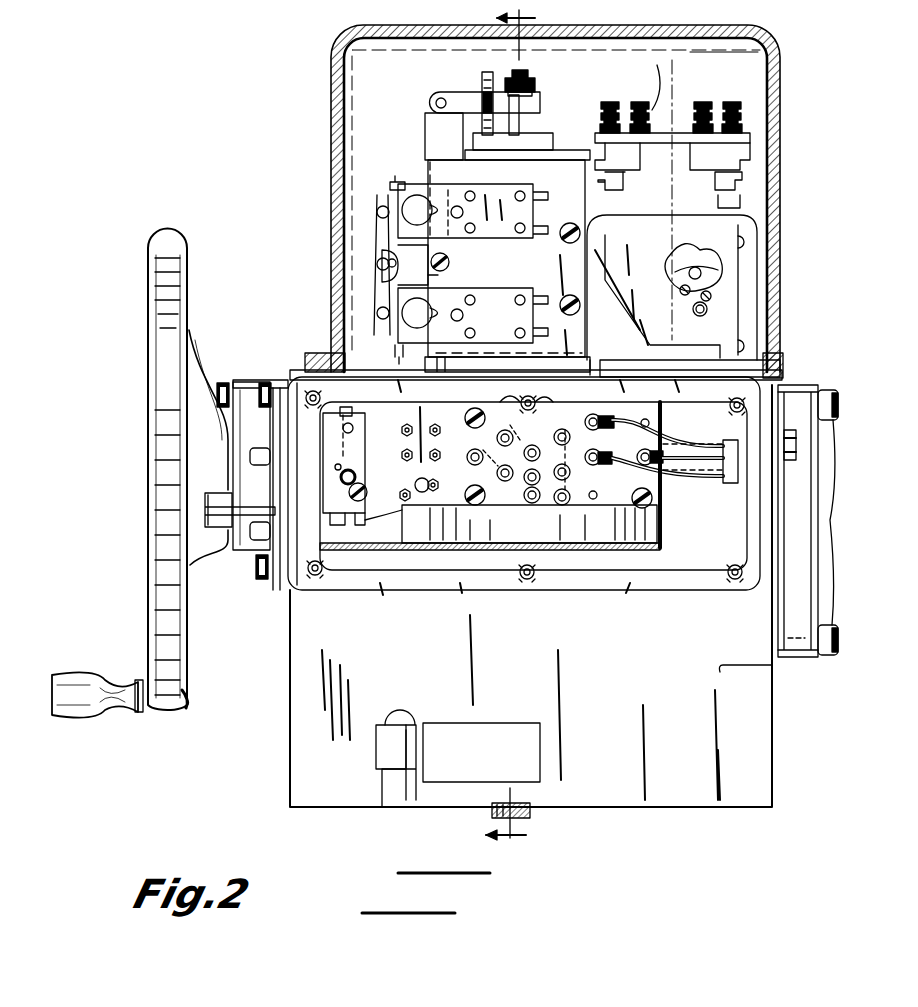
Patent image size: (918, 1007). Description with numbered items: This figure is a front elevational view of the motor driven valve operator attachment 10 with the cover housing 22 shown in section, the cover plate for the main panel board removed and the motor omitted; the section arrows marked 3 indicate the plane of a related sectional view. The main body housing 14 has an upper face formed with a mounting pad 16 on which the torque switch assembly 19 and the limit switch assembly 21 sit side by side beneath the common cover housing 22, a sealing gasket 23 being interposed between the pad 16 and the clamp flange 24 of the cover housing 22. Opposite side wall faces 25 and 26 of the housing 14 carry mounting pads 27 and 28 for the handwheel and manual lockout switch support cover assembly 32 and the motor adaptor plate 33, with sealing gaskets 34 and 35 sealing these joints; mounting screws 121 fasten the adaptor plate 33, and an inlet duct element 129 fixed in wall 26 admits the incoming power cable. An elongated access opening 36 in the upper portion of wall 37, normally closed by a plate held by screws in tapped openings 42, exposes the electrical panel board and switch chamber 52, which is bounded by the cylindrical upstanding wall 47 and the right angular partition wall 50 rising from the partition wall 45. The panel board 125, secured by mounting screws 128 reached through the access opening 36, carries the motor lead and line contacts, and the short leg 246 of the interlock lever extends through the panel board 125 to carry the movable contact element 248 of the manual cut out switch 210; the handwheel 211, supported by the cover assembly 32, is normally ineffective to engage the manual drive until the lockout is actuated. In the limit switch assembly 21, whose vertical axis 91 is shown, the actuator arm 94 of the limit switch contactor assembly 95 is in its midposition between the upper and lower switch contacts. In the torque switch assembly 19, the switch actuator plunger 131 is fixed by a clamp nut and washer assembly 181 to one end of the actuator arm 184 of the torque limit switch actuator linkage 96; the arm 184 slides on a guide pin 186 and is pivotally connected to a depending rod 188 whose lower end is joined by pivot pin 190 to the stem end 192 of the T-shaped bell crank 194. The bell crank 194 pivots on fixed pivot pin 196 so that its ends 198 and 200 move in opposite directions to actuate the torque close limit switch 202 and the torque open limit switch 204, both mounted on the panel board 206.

The motor driven valve operator attachment 10 is at (332, 45).
The cover housing 22 is at (412, 35).
The section line 3 is at (518, 427).
The guide pin 186 is at (500, 70).
The actuator arm 184 is at (475, 92).
The clamp nut and washer assembly 181 is at (533, 82).
The torque limit switch actuator linkage 96 is at (418, 100).
The depending rod 188 is at (425, 130).
The switch actuator plunger 131 is at (553, 128).
The torque switch assembly 19 is at (563, 150).
The limit switch assembly 21 is at (660, 204).
The vertical axis 91 is at (674, 88).
The limit switch contactor assembly 95 is at (752, 115).
The actuator arm 94 is at (742, 178).
The torque close limit switch 202 is at (422, 200).
The bell crank end 198 is at (377, 212).
The T-shaped bell crank 194 is at (370, 262).
The pivot pin 190 is at (449, 260).
The stem end 192 is at (448, 276).
The fixed pivot pin 196 is at (380, 272).
The panel board 206 is at (582, 278).
The bell crank end 200 is at (377, 315).
The torque open limit switch 204 is at (464, 318).
The clamp flange 24 is at (304, 353).
The sealing gasket 23 is at (377, 353).
The handwheel 211 is at (178, 268).
The handwheel and manual lockout switch support cover assembly 32 is at (248, 380).
The sealing gasket 34 is at (283, 380).
The tapped openings 42 is at (321, 397).
The mounting screws 128 is at (478, 410).
The manual cut out switch 210 is at (340, 428).
The movable contact element 248 is at (360, 462).
The mounting pad 16 is at (782, 370).
The sealing gasket 35 is at (788, 385).
The mounting screws 121 is at (822, 406).
The inlet duct element 129 is at (798, 460).
The electrical panel board and switch chamber 52 is at (366, 546).
The short leg 246 is at (511, 524).
The panel board 125 is at (501, 524).
The cylindrical upstanding wall 47 is at (650, 530).
The partition wall 50 is at (722, 516).
The access opening 36 is at (490, 542).
The partition wall 45 is at (714, 566).
The mounting pad 27 is at (277, 590).
The motor adaptor plate 33 is at (795, 612).
The mounting pad 28 is at (776, 662).
The wall 37 is at (640, 672).
The side wall face 25 is at (290, 690).
The main body housing 14 is at (646, 812).
The side wall face 26 is at (765, 703).